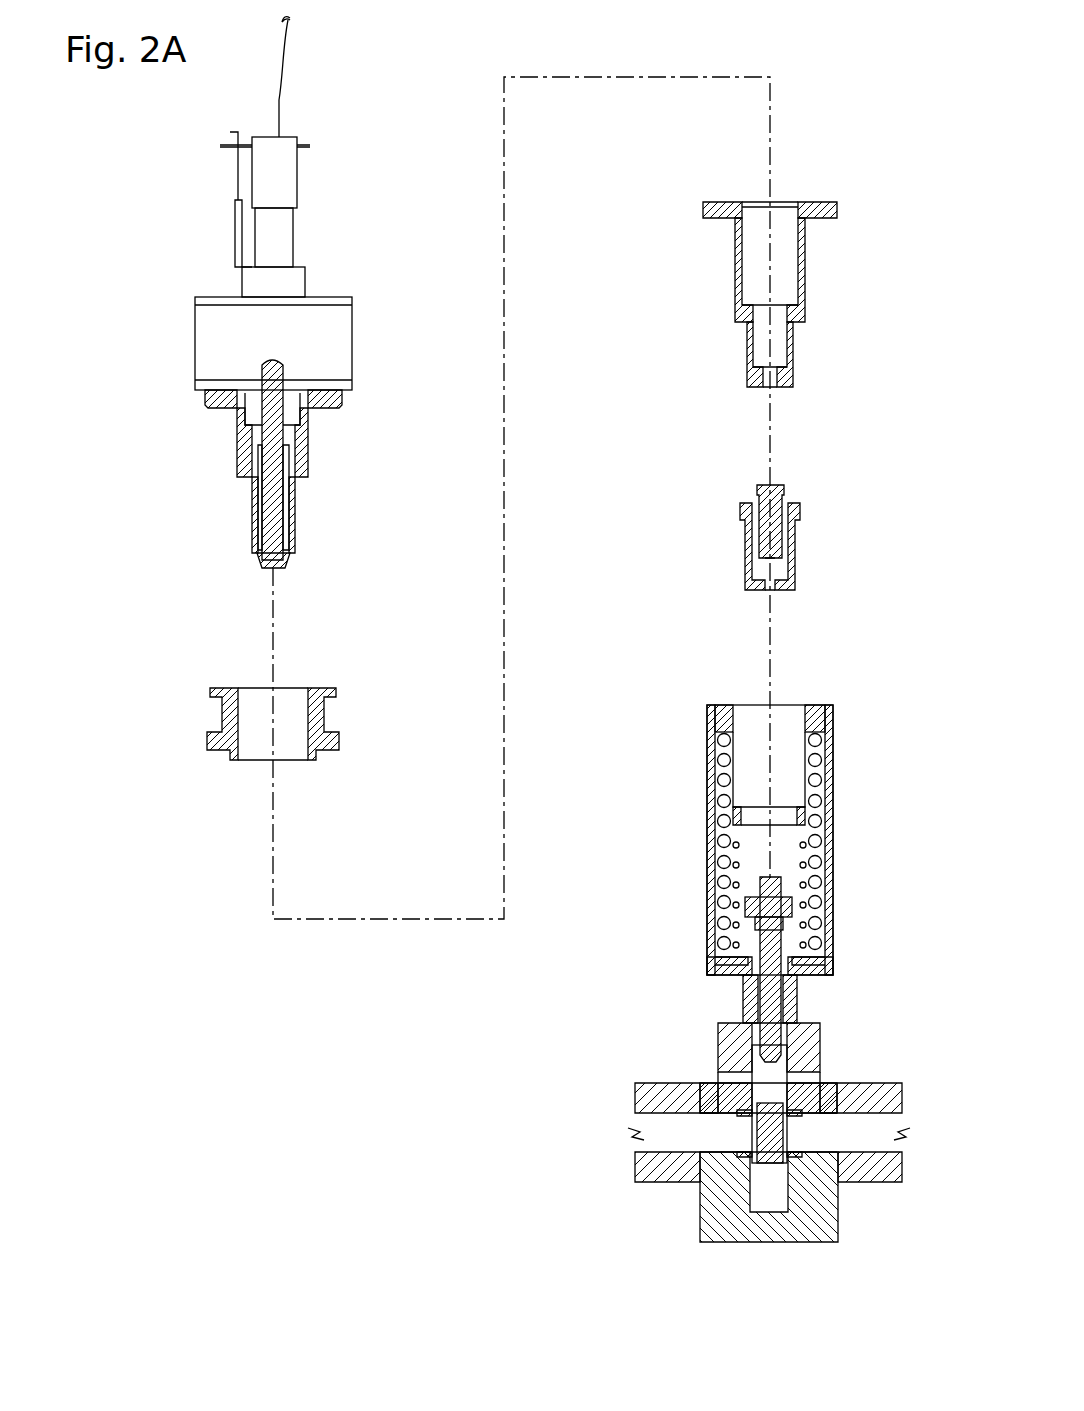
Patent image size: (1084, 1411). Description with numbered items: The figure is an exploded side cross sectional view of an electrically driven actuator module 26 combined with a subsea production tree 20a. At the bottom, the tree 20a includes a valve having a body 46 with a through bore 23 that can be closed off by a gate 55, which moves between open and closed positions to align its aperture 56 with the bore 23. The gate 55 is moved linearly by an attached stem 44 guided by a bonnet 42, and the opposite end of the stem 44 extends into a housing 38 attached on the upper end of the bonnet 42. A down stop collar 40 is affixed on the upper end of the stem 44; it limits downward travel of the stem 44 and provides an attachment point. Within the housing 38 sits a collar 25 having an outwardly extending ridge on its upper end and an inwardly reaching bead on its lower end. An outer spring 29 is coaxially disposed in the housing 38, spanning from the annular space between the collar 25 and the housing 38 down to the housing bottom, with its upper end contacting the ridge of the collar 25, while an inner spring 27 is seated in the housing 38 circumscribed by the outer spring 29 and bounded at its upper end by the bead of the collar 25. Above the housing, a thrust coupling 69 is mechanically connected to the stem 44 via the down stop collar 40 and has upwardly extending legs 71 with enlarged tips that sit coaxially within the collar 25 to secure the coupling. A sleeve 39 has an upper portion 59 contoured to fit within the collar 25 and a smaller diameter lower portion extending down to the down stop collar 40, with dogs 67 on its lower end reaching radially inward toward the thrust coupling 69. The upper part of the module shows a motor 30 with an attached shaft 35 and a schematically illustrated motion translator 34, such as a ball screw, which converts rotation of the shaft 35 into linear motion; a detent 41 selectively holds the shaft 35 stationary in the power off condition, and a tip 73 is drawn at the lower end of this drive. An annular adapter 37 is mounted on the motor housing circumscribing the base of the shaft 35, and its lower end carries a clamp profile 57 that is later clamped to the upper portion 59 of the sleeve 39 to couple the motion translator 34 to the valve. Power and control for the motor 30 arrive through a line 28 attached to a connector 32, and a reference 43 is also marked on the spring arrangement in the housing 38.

The line 28 is at (300, 67).
The connector 32 is at (295, 228).
The motor 30 is at (195, 331).
The detent 41 is at (255, 420).
The motion translator 34 is at (225, 480).
The shaft 35 is at (298, 490).
The nozzle tip 73 is at (262, 566).
The annular adapter 37 is at (215, 718).
The clamp profile 57 is at (338, 735).
The upper portion of sleeve 59 is at (838, 208).
The sleeve 39 is at (735, 270).
The dogs 67 is at (765, 373).
The legs 71 is at (800, 536).
The thrust coupling 69 is at (795, 580).
The actuator module 26 is at (638, 752).
The outer spring 29 is at (830, 732).
The collar 25 is at (712, 790).
The housing 38 is at (712, 835).
The inner spring 43 is at (722, 862).
The down stop collar 40 is at (722, 903).
The inner spring 27 is at (833, 872).
The bonnet 42 is at (846, 1020).
The stem 44 is at (770, 1003).
The valve body 46 is at (670, 1127).
The through bore 23 is at (678, 1124).
The aperture 56 is at (770, 1088).
The gate 55 is at (785, 1130).
The subsea production tree 20a is at (642, 1210).